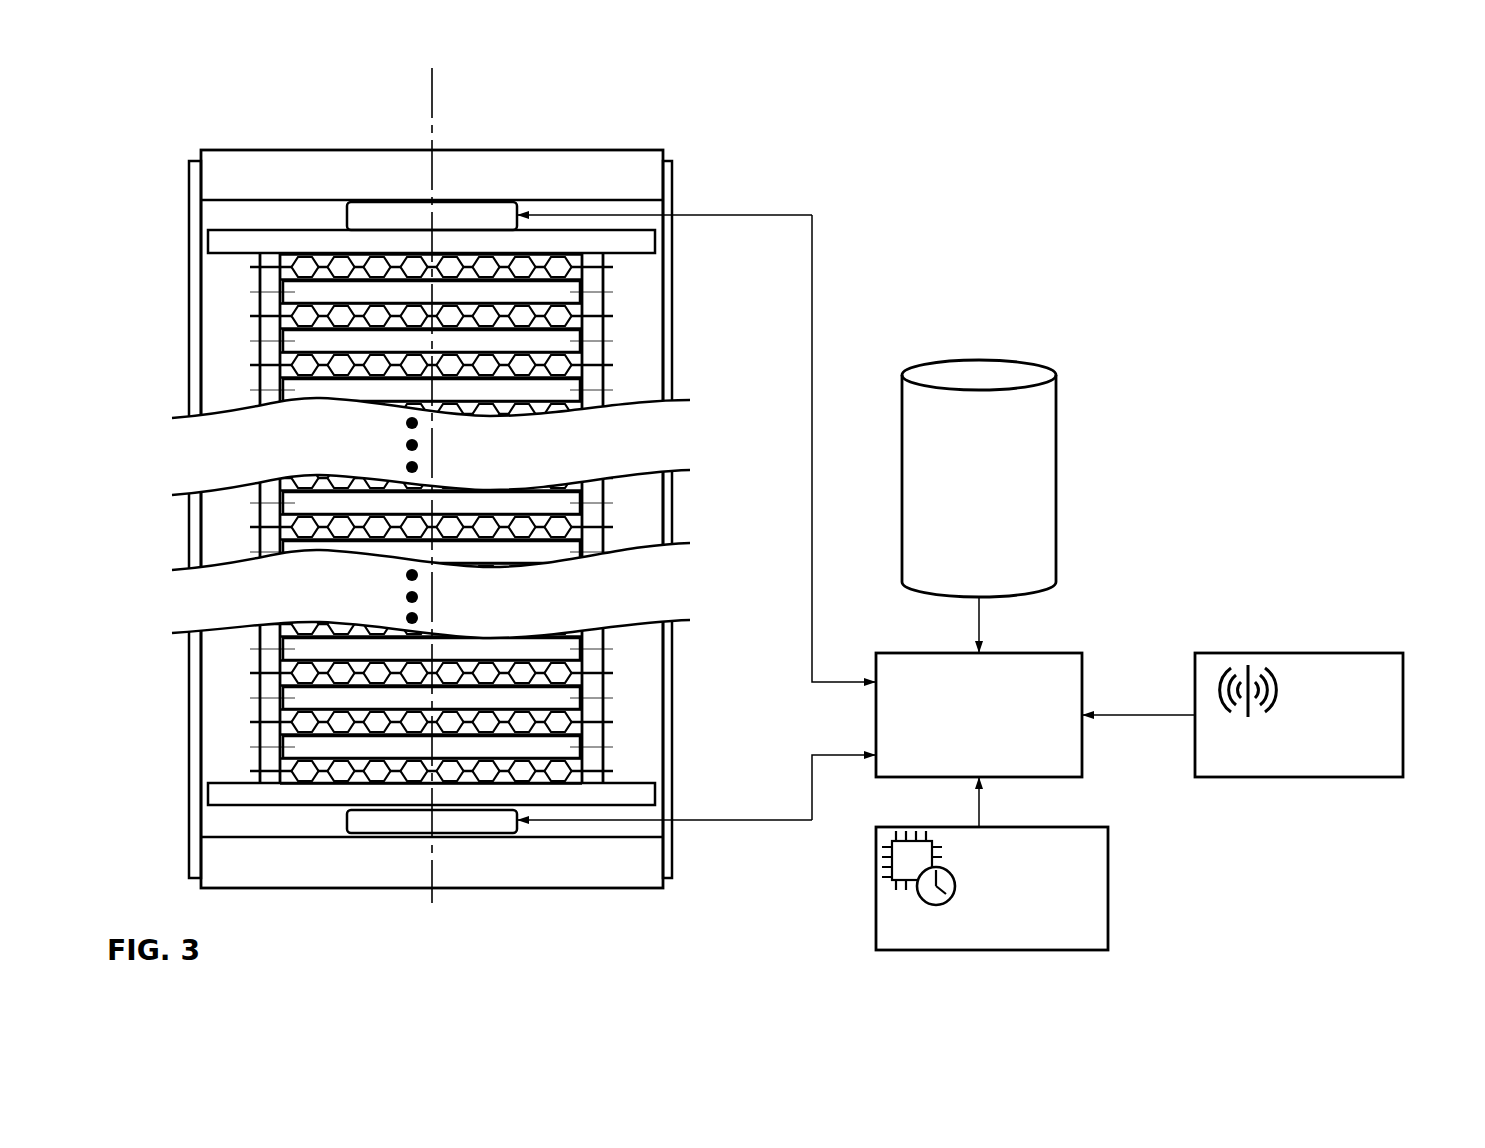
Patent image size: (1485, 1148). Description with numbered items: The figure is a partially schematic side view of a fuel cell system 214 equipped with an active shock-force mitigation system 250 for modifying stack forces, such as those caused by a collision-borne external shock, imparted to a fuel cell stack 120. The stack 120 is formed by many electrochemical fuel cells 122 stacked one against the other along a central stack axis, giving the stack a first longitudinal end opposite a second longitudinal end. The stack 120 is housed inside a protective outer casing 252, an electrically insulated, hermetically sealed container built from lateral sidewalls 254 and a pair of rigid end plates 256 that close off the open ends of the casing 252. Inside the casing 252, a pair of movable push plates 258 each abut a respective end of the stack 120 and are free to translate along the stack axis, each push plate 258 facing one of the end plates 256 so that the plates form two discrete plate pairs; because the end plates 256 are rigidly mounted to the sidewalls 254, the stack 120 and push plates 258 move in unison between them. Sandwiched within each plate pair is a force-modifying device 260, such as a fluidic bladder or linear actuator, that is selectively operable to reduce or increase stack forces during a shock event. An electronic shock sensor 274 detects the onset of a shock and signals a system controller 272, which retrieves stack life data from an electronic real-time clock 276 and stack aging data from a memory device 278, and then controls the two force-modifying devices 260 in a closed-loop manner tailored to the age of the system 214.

The fuel cell stack 120 is at (206, 349).
The electrochemical fuel cells 122 is at (636, 277).
The fuel cell system 214 is at (826, 101).
The active shock-force mitigation system 250 is at (1278, 411).
The protective outer casing 252 is at (668, 156).
The lateral sidewalls 254 is at (189, 178).
The end plates 256 is at (635, 150).
The push plates 258 is at (208, 233).
The force-modifying device 260 is at (385, 212).
The system controller 272 is at (1062, 653).
The electronic shock sensor 274 is at (1366, 653).
The electronic real-time clock 276 is at (1070, 827).
The memory device 278 is at (1047, 363).